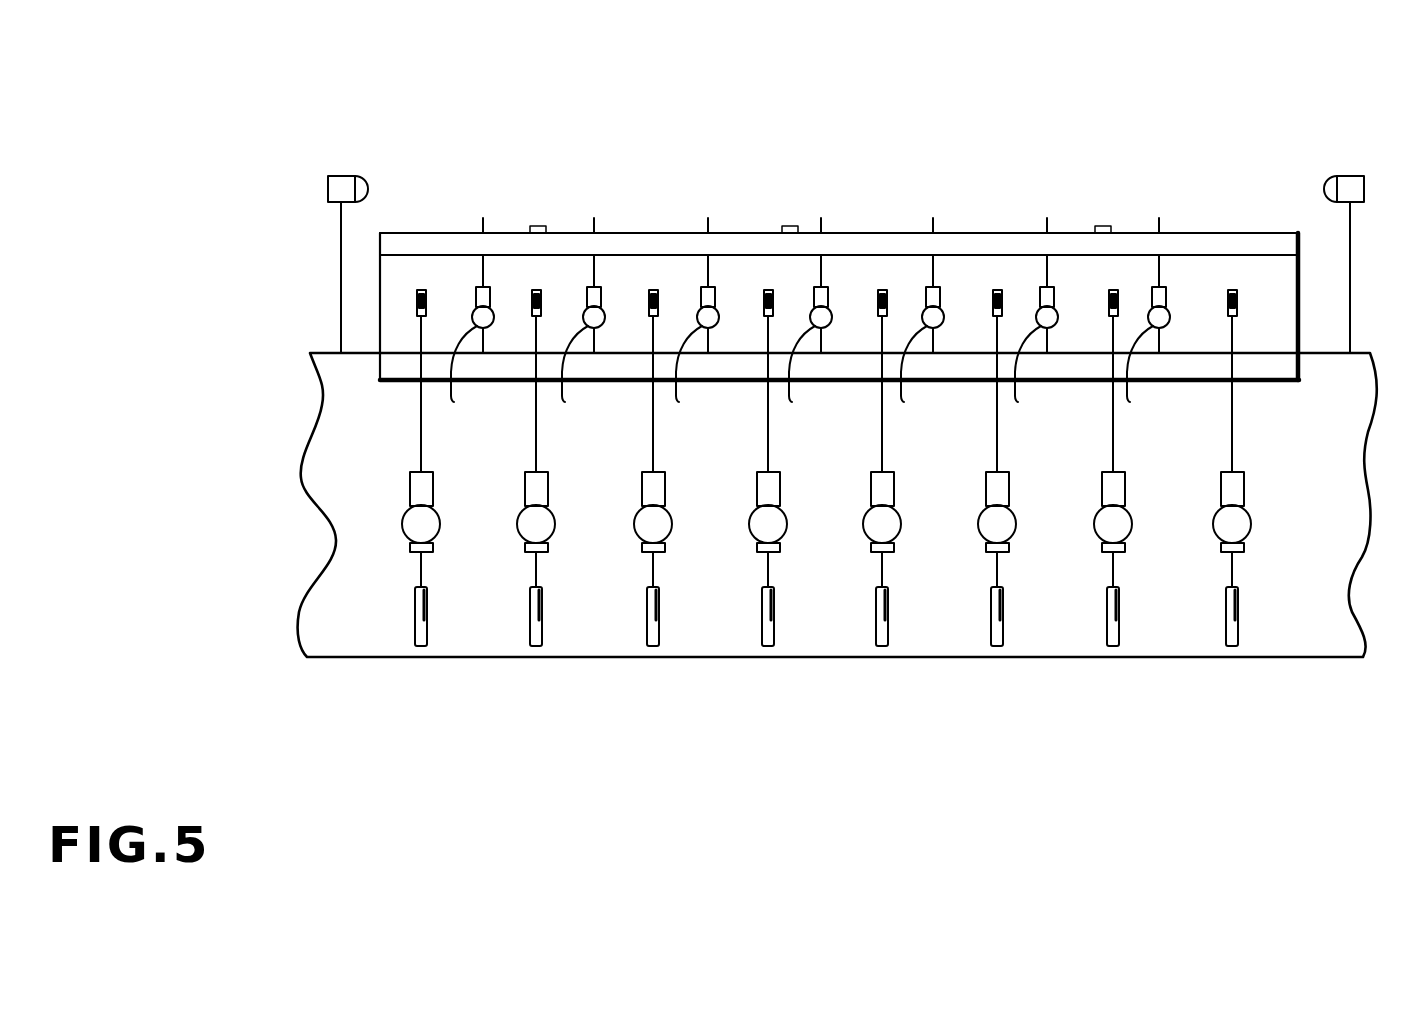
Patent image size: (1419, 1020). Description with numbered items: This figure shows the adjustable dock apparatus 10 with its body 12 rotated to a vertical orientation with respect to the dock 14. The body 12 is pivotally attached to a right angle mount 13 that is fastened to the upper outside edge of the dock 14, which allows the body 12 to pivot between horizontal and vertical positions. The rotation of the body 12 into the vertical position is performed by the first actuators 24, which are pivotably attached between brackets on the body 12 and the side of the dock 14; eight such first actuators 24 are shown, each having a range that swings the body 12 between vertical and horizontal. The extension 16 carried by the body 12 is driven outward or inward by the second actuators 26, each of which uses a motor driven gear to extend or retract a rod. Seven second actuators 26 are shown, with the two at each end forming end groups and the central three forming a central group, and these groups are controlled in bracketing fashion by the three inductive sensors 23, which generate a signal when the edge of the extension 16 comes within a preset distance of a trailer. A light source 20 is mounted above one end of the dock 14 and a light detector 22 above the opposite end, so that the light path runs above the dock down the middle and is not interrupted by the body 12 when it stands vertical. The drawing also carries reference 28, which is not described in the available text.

The adjustable dock apparatus 10 is at (963, 190).
The body 12 is at (1118, 268).
The right angle mount 13 is at (1263, 365).
The dock 14 is at (341, 443).
The extension 16 is at (869, 246).
The light source 20 is at (338, 182).
The light detector 22 is at (1350, 185).
The inductive sensor 23 is at (536, 226).
The first actuators 24 is at (410, 548).
The second actuators 26 is at (805, 382).
The connectors 28 is at (481, 228).